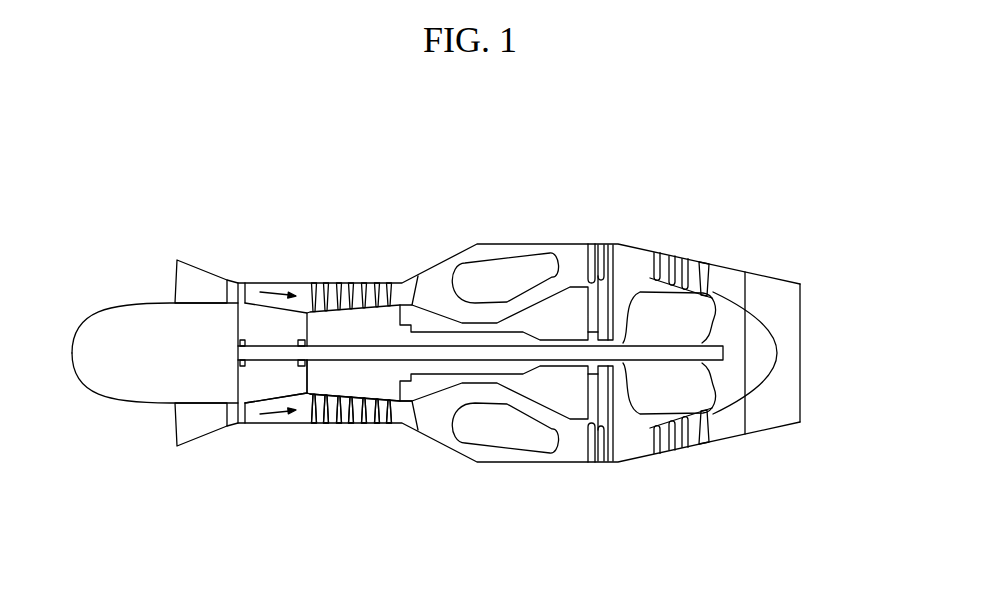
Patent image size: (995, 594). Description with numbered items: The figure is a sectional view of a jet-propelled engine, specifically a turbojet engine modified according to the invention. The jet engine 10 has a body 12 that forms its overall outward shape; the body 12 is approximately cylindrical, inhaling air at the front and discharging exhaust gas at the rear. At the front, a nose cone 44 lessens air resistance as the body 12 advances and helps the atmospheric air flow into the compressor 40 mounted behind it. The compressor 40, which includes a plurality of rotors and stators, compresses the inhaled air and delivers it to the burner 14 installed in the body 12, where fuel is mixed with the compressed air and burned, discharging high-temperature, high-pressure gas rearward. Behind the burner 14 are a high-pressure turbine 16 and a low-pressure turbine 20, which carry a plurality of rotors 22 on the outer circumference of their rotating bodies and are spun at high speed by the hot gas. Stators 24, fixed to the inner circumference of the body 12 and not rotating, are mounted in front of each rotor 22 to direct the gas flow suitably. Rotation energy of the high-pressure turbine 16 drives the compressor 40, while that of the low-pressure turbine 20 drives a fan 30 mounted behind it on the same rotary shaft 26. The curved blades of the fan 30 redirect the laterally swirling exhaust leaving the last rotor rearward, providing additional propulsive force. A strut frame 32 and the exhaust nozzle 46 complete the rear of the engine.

The jet engine 10 is at (802, 182).
The body 12 is at (647, 247).
The burner 14 is at (497, 272).
The high-pressure turbine 16 is at (595, 245).
The low-pressure turbine 20 is at (677, 250).
The rotors 22 is at (655, 453).
The stators 24 is at (685, 447).
The rotary shaft 26 is at (263, 357).
The fan 30 is at (707, 258).
The strut frame 32 is at (735, 277).
The compressor 40 is at (352, 282).
The nose cone 44 is at (128, 395).
The exhaust nozzle 46 is at (802, 287).